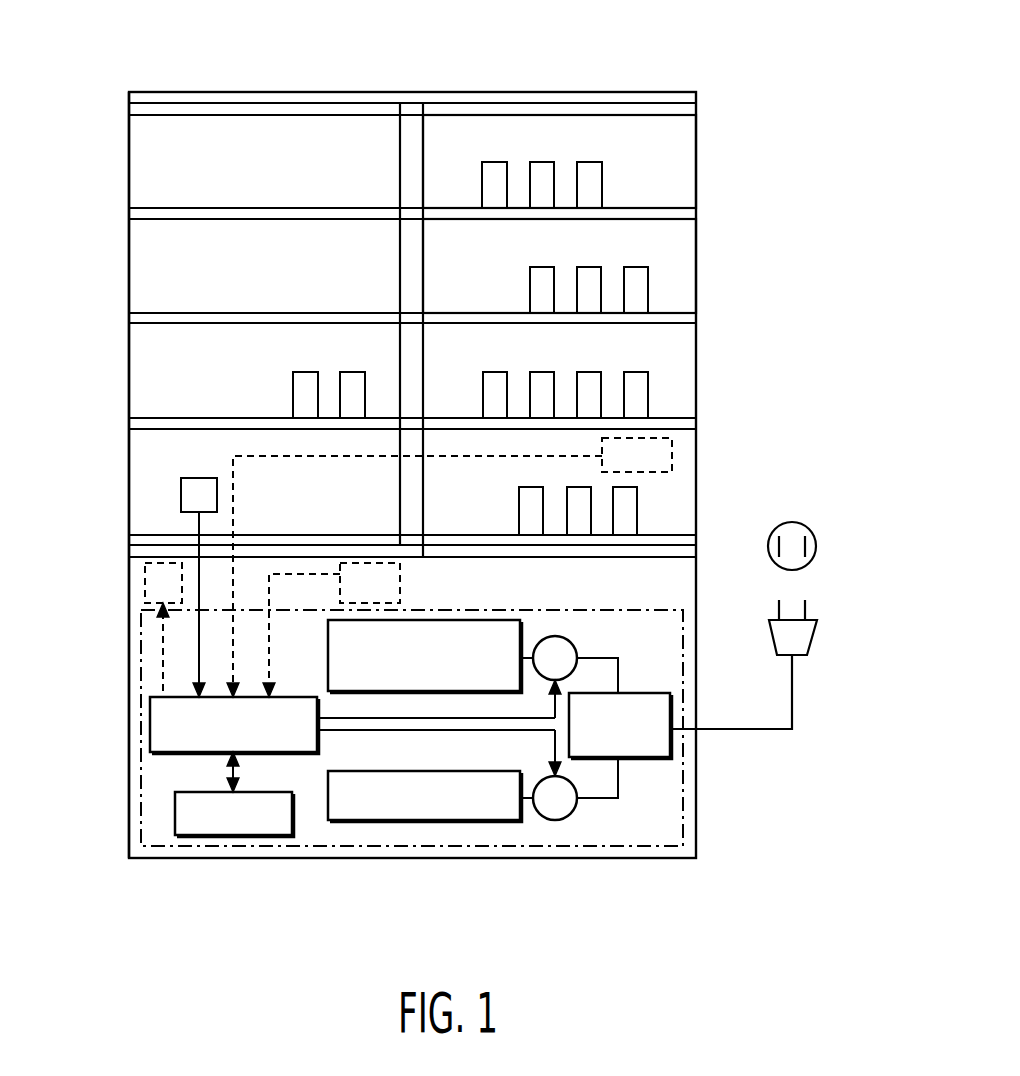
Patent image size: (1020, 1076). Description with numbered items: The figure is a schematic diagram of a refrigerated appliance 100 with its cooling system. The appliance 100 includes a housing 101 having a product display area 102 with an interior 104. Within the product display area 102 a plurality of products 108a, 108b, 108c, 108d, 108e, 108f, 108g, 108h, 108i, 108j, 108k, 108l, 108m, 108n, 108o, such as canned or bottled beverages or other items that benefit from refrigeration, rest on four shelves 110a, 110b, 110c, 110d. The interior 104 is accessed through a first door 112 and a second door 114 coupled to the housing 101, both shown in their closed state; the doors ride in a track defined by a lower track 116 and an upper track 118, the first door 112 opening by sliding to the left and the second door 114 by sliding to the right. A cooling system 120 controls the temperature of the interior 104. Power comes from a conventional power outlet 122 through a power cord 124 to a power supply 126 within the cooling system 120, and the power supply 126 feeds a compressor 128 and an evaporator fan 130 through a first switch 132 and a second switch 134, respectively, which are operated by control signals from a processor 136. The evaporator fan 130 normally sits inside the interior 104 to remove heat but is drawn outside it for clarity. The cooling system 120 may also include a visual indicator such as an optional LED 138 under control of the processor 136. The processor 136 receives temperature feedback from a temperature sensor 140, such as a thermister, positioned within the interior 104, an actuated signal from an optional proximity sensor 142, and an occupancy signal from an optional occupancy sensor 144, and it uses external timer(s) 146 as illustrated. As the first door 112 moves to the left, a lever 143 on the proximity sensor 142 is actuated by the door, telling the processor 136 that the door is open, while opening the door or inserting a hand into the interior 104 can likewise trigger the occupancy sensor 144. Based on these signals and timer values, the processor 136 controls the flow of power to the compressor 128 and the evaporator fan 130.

The appliance 100 is at (697, 125).
The housing 101 is at (126, 470).
The product display area 102 is at (685, 240).
The interior 104 is at (678, 160).
The product 108a is at (490, 162).
The product 108b is at (538, 162).
The product 108c is at (590, 162).
The product 108d is at (532, 267).
The product 108e is at (579, 267).
The product 108f is at (648, 267).
The product 108g is at (293, 392).
The product 108h is at (342, 372).
The product 108i is at (493, 372).
The product 108j is at (545, 372).
The product 108k is at (585, 372).
The product 108l is at (648, 372).
The product 108m is at (525, 487).
The product 108n is at (580, 487).
The product 108o is at (637, 508).
The shelf 110a is at (697, 545).
The shelf 110b is at (697, 416).
The shelf 110c is at (697, 313).
The shelf 110d is at (697, 205).
The first door 112 is at (445, 128).
The second door 114 is at (368, 128).
The lower track 116 is at (133, 543).
The upper track 118 is at (133, 110).
The cooling system 120 is at (683, 830).
The power outlet 122 is at (812, 535).
The power cord 124 is at (740, 728).
The power supply 126 is at (670, 745).
The compressor 128 is at (460, 771).
The evaporator fan 130 is at (328, 672).
The first switch 132 is at (573, 812).
The second switch 134 is at (573, 645).
The processor 136 is at (150, 725).
The LED 138 is at (148, 580).
The temperature sensor 140 is at (181, 495).
The proximity sensor 142 is at (400, 580).
The lever 143 is at (378, 572).
The occupancy sensor 144 is at (672, 456).
The timer(s) 146 is at (228, 835).